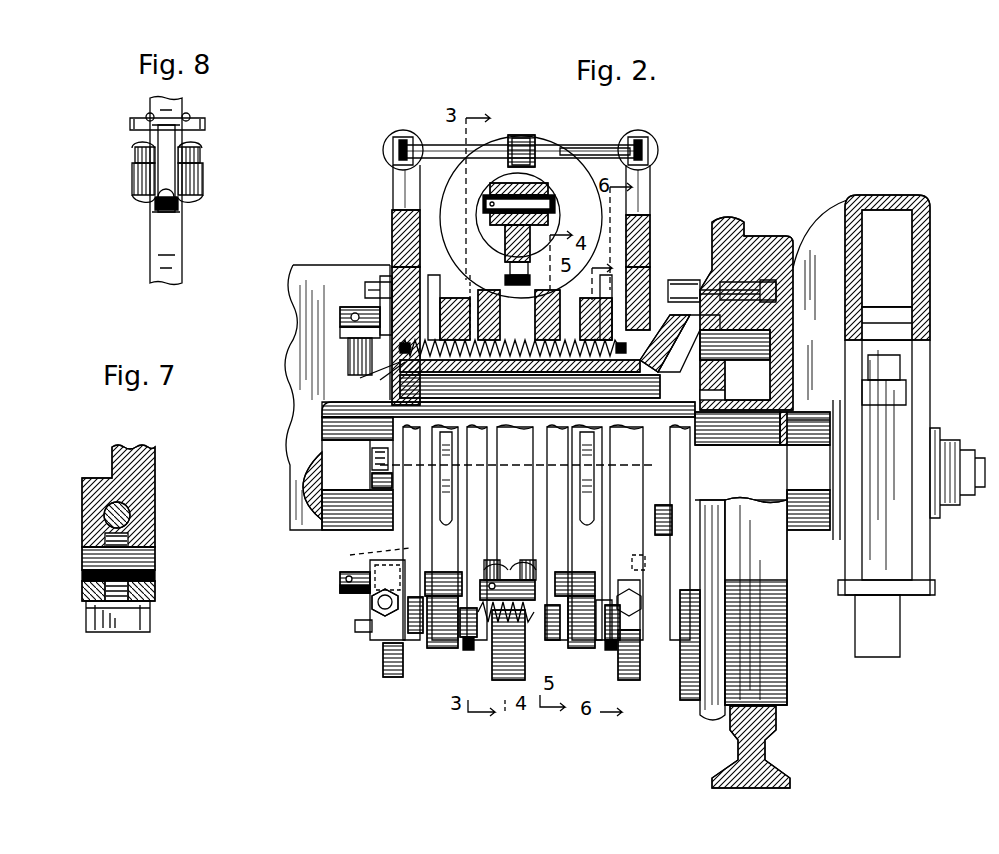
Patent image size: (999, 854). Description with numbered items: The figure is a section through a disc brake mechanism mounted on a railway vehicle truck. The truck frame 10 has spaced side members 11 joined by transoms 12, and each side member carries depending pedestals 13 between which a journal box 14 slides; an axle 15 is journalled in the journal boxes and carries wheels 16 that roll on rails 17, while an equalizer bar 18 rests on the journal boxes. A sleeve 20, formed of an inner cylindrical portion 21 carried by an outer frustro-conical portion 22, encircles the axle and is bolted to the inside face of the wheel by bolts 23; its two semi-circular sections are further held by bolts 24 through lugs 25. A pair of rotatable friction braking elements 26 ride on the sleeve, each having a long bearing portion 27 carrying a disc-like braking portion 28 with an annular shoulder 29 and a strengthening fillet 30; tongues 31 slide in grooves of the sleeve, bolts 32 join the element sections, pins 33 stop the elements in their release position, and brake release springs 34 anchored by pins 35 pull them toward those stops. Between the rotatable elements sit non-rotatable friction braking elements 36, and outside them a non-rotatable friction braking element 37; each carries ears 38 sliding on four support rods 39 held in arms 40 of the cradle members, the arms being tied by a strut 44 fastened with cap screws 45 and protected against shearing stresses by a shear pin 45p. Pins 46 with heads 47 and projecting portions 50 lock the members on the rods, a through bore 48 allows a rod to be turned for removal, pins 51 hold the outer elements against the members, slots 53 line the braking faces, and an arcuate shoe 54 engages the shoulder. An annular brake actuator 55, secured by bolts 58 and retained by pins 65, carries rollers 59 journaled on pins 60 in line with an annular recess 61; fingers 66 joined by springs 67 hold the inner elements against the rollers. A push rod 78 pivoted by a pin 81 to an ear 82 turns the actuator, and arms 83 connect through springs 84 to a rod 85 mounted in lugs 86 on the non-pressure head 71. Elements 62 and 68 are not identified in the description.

In FIG. 2, the truck frame 10 is at (818, 228).
In FIG. 2, the side members 11 is at (930, 265).
In FIG. 2, the transom 12 is at (296, 312).
In FIG. 2, the pedestals 13 is at (918, 575).
In FIG. 2, the journal box 14 is at (935, 430).
In FIG. 2, the axle 15 is at (335, 447).
In FIG. 2, the wheel 16 is at (787, 672).
In FIG. 2, the rails 17 is at (765, 750).
In FIG. 2, the equalizer bar 18 is at (860, 615).
In FIG. 2, the sleeve 20 is at (622, 383).
In FIG. 2, the inner cylindrical portion 21 is at (530, 385).
In FIG. 2, the frustro-conical portion 22 is at (700, 350).
In FIG. 2, the bolts 23 is at (690, 640).
In FIG. 2, the bolts 24 is at (372, 478).
In FIG. 2, the lugs 25 is at (372, 462).
In FIG. 2, the rotatable friction braking elements 26 is at (625, 285).
In FIG. 2, the bearing portion 27 is at (545, 354).
In FIG. 2, the braking portion 28 is at (610, 650).
In FIG. 2, the annular shoulder 29 is at (526, 307).
In FIG. 2, the fillet 30 is at (510, 367).
In FIG. 2, the tongues 31 is at (383, 368).
In FIG. 2, the bolts 32 is at (517, 532).
In FIG. 2, the pins 33 is at (560, 472).
In FIG. 2, the brake release spring 34 is at (530, 383).
In FIG. 2, the pins 35 is at (497, 378).
In FIG. 2, the non-rotatable friction braking elements 36 is at (612, 640).
In FIG. 2, the non-rotatable friction braking element 37 is at (395, 677).
In FIG. 2, the ears 38 is at (560, 570).
In FIG. 8, the support rods 39 is at (204, 124).
In FIG. 2, the support rods 39 is at (340, 580).
In FIG. 7, the arms 40 is at (82, 523).
In FIG. 2, the arms 40 is at (660, 660).
In FIG. 7, the strut 44 is at (82, 590).
In FIG. 2, the strut 44 is at (645, 490).
In FIG. 7, the cap screws 45 is at (150, 617).
In FIG. 2, the cap screws 45 is at (650, 597).
In FIG. 7, the shear pin 45p is at (82, 557).
In FIG. 7, the pin 46 is at (130, 520).
In FIG. 2, the pin 46 is at (650, 565).
In FIG. 2, the head 47 is at (660, 648).
In FIG. 2, the through bore 48 is at (342, 593).
In FIG. 2, the projecting portion 50 is at (355, 628).
In FIG. 2, the pins 51 is at (415, 633).
In FIG. 2, the slots 53 is at (605, 530).
In FIG. 2, the arcuate shoe 54 is at (660, 340).
In FIG. 8, the brake actuator 55 is at (168, 268).
In FIG. 2, the brake actuator 55 is at (505, 680).
In FIG. 8, the bolts 58 is at (176, 205).
In FIG. 8, the rollers 59 is at (200, 179).
In FIG. 2, the rollers 59 is at (518, 562).
In FIG. 8, the pins 60 is at (196, 152).
In FIG. 2, the annular recess 61 is at (520, 306).
In FIG. 2, the plate 62 is at (532, 257).
In FIG. 8, the pins 65 is at (190, 116).
In FIG. 2, the pins 65 is at (508, 580).
In FIG. 2, the finger 66 is at (604, 645).
In FIG. 2, the spring 67 is at (506, 623).
In FIG. 2, the rod 68 is at (565, 143).
In FIG. 2, the non-pressure head 71 is at (452, 193).
In FIG. 2, the push rod 78 is at (543, 186).
In FIG. 2, the pin 81 is at (555, 204).
In FIG. 2, the ear 82 is at (508, 182).
In FIG. 2, the arm 83 is at (652, 188).
In FIG. 2, the spring 84 is at (652, 135).
In FIG. 2, the rod 85 is at (603, 146).
In FIG. 2, the lugs 86 is at (528, 134).